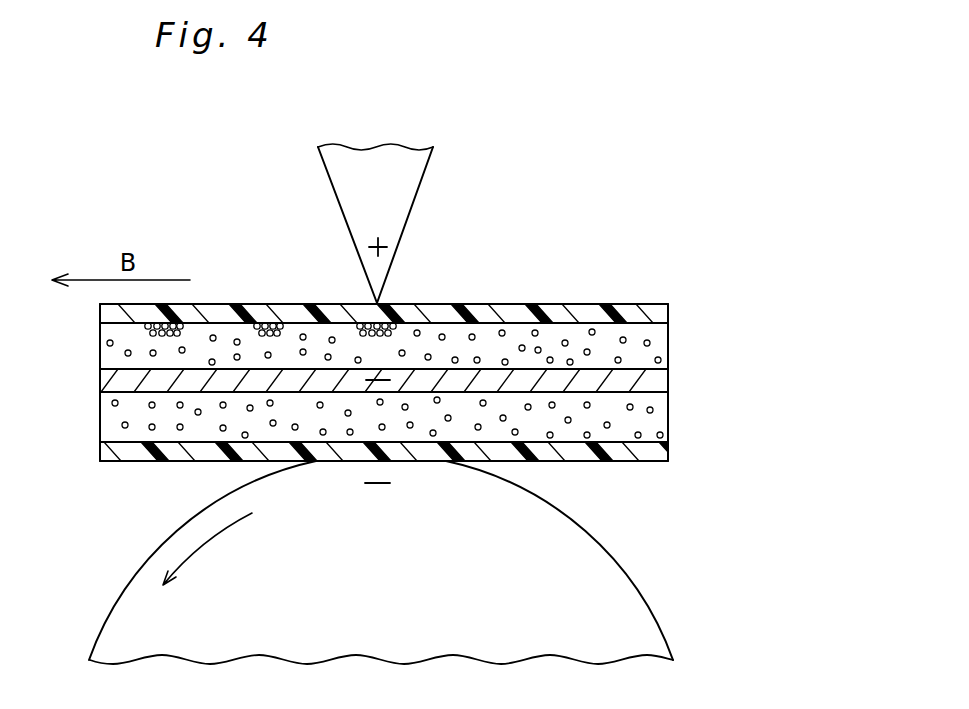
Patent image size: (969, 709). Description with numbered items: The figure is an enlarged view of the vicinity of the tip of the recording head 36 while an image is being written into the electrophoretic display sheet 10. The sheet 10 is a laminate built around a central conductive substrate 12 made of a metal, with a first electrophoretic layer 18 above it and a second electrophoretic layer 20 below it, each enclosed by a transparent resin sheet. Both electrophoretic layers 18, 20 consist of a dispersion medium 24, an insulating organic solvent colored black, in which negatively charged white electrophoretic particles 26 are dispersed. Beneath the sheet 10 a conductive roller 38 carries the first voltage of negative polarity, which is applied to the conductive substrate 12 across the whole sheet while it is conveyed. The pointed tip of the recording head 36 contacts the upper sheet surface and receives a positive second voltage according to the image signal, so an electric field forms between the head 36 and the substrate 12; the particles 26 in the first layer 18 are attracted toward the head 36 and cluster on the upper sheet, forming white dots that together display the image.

The electrophoretic display sheet 10 is at (652, 303).
The conductive substrate 12 is at (662, 382).
The first electrophoretic layer 18 is at (493, 229).
The second electrophoretic layer 20 is at (692, 512).
The dispersion medium 24 is at (488, 350).
The electrophoretic particles 26 is at (348, 322).
The recording head 36 is at (418, 195).
The conductive roller 38 is at (640, 590).